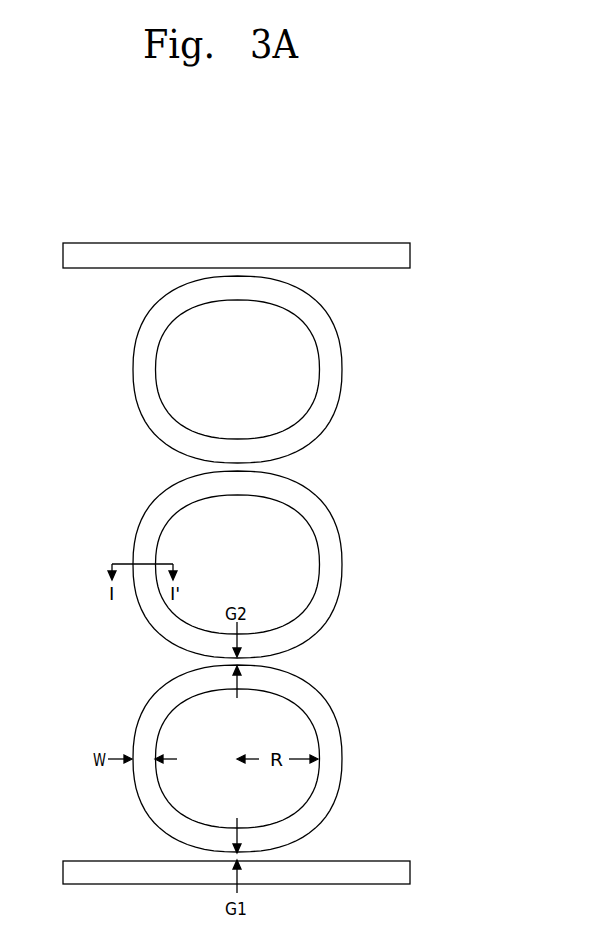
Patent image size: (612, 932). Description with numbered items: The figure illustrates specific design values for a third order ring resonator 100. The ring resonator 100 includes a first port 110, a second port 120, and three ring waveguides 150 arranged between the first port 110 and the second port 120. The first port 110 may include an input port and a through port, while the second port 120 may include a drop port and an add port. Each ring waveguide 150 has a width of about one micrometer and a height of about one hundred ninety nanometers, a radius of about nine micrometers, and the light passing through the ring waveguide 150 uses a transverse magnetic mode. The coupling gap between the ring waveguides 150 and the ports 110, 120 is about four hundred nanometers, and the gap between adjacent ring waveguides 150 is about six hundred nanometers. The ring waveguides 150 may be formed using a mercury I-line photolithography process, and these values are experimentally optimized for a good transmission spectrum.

The third order ring resonator 100 is at (441, 186).
The first port 110 is at (406, 869).
The second port 120 is at (410, 253).
The ring waveguide 150 is at (335, 339).